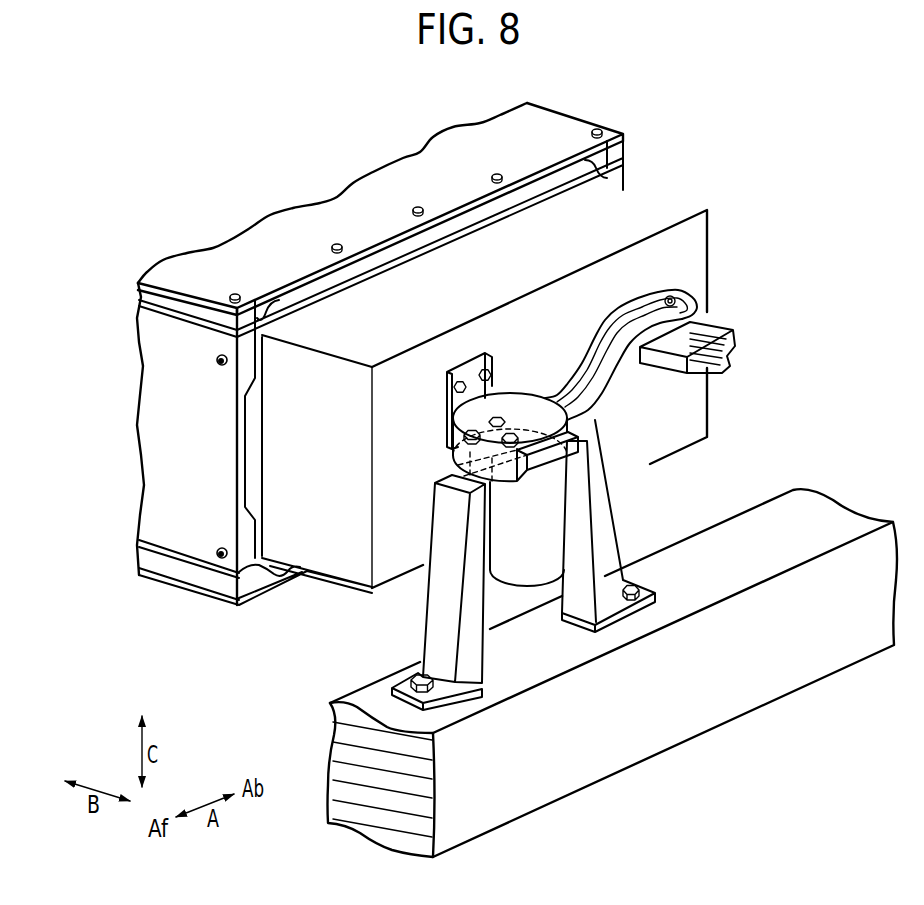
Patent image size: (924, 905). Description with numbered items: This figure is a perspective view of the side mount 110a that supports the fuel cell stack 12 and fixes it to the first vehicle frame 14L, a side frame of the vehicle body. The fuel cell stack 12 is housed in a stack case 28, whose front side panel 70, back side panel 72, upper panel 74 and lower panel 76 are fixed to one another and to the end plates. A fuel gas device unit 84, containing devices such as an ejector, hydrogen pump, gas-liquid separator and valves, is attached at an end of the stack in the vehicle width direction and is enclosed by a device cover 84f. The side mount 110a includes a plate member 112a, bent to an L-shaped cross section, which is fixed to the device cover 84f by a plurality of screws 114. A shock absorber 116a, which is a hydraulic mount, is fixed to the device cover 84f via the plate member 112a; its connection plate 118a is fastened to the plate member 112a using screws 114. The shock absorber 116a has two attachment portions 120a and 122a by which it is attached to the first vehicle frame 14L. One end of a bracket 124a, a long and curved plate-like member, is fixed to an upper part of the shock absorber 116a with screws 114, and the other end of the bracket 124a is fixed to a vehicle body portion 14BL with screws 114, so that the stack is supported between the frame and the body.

The fuel cell stack 12 is at (156, 151).
The stack case 28 is at (240, 228).
The front side panel 70 is at (162, 482).
The back side panel 72 is at (627, 178).
The upper panel 74 is at (370, 187).
The lower panel 76 is at (272, 590).
The fuel gas device unit 84 is at (338, 578).
The device cover 84f is at (395, 557).
The side mount 110a is at (507, 348).
The plate member 112a is at (470, 360).
The screws 114 is at (502, 418).
The shock absorber 116a is at (522, 562).
The connection plate 118a is at (538, 462).
The attachment portion 120a is at (612, 610).
The attachment portion 122a is at (470, 678).
The bracket 124a is at (590, 413).
The first vehicle frame 14L is at (802, 673).
The vehicle body portion 14BL is at (732, 342).